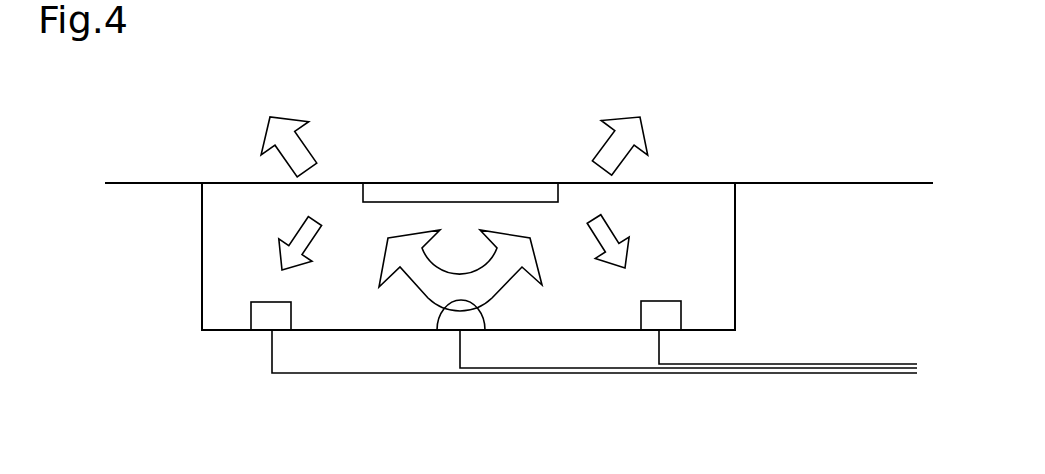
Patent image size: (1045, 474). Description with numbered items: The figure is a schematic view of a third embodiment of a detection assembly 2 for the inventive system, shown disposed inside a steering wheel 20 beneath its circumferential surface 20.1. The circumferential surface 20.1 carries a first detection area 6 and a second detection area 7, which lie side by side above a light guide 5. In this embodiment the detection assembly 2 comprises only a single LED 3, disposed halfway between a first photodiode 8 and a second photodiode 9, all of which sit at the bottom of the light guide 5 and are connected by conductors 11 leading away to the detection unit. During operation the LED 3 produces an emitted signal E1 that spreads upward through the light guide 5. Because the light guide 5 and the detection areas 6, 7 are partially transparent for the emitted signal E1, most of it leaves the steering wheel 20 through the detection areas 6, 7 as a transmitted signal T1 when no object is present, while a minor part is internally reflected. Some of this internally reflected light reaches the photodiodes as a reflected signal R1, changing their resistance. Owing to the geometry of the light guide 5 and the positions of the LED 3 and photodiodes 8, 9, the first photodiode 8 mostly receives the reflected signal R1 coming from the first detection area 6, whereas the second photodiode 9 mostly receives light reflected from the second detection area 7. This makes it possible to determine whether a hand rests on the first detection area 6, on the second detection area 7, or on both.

The detection assembly 2 is at (746, 278).
The LED 3 is at (437, 318).
The light guide 5 is at (693, 268).
The first detection area 6 is at (253, 178).
The second detection area 7 is at (687, 178).
The first photodiode 8 is at (251, 304).
The second photodiode 9 is at (681, 315).
The conductors 11 is at (380, 373).
The steering wheel 20 is at (134, 241).
The circumferential surface 20.1 is at (135, 178).
The transmitted signal T1 is at (318, 138).
The reflected signal R1 is at (650, 200).
The emitted signal E1 is at (457, 262).